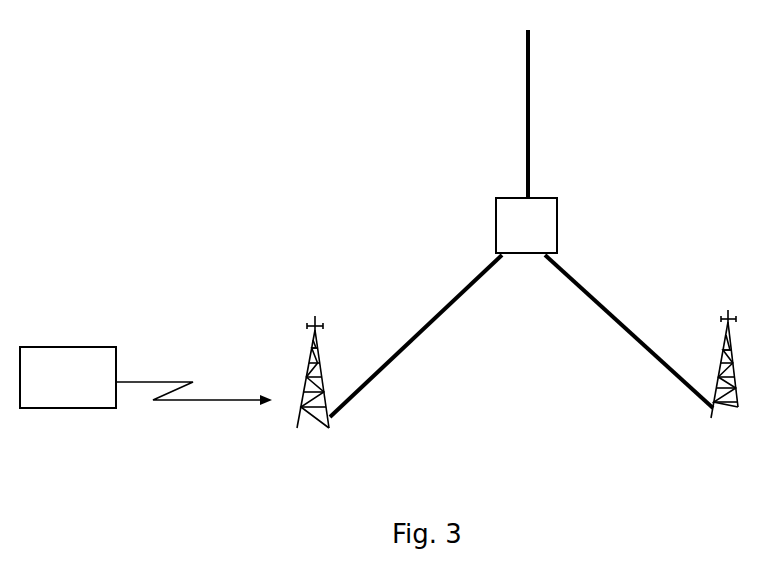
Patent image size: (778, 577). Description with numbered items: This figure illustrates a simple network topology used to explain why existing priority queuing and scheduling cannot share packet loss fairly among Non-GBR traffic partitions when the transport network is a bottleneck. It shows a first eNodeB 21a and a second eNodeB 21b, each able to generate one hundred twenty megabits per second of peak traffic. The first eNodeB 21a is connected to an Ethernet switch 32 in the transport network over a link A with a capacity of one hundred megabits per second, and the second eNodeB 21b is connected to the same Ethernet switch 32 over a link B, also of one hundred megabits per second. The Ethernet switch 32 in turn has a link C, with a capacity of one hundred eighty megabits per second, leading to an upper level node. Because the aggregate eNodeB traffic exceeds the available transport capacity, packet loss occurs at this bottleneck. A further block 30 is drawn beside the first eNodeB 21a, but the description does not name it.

The transmitter / source unit 30 is at (146, 377).
The Ethernet switch 32 is at (526, 225).
The first eNodeB 21a is at (310, 336).
The second eNodeB 21b is at (722, 346).
The link A is at (437, 313).
The link B is at (580, 280).
The link C is at (528, 130).